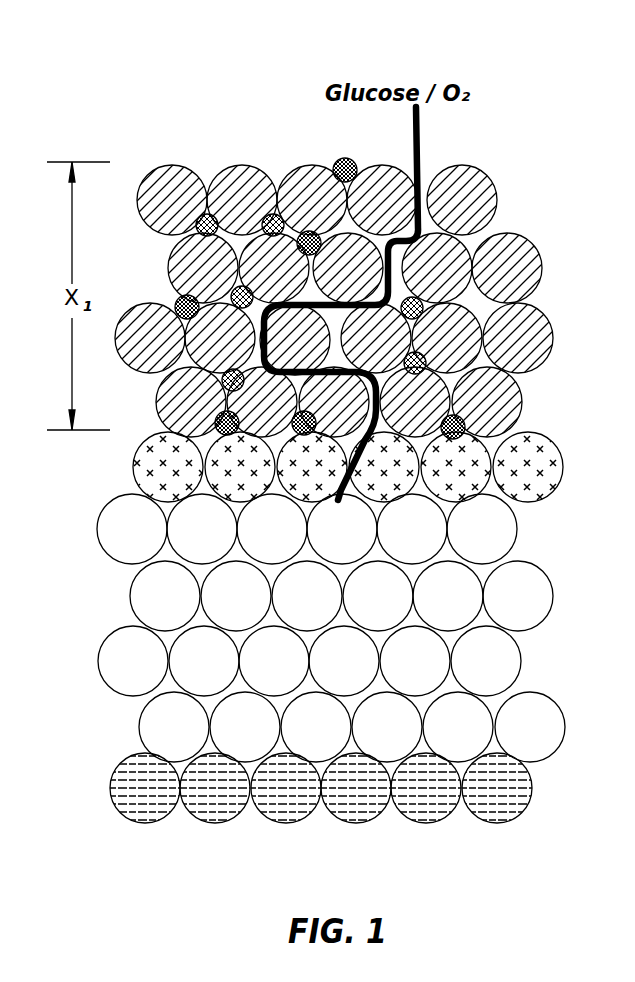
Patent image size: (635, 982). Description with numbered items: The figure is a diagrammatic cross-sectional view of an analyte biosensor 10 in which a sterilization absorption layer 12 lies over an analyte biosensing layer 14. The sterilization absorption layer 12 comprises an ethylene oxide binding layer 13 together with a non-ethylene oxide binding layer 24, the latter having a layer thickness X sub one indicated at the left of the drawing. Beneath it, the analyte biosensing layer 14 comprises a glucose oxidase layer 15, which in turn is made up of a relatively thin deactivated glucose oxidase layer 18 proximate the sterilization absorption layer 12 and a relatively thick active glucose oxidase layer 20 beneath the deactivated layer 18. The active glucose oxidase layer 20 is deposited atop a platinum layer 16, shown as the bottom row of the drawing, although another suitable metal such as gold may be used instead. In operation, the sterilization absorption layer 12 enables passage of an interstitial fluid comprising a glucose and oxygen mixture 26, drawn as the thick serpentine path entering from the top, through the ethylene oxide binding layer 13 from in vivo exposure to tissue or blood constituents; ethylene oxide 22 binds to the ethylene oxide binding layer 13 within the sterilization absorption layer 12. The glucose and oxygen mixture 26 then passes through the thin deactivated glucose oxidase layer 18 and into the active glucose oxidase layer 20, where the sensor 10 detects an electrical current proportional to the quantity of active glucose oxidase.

The analyte biosensor 10 is at (196, 100).
The sterilization absorption layer 12 is at (557, 173).
The ethylene oxide (ETO) binding layer 13 is at (606, 267).
The analyte biosensing layer 14 is at (558, 431).
The glucose oxidase (GOx) layer 15 is at (608, 563).
The platinum layer 16 is at (557, 760).
The deactivated glucose oxidase (GOx) layer 18 is at (108, 432).
The active glucose oxidase (GOx) layer 20 is at (102, 493).
The ethylene oxide 22 is at (338, 160).
The non-ethylene oxide binding layer 24 is at (268, 218).
The glucose and oxygen mixture 26 is at (425, 145).